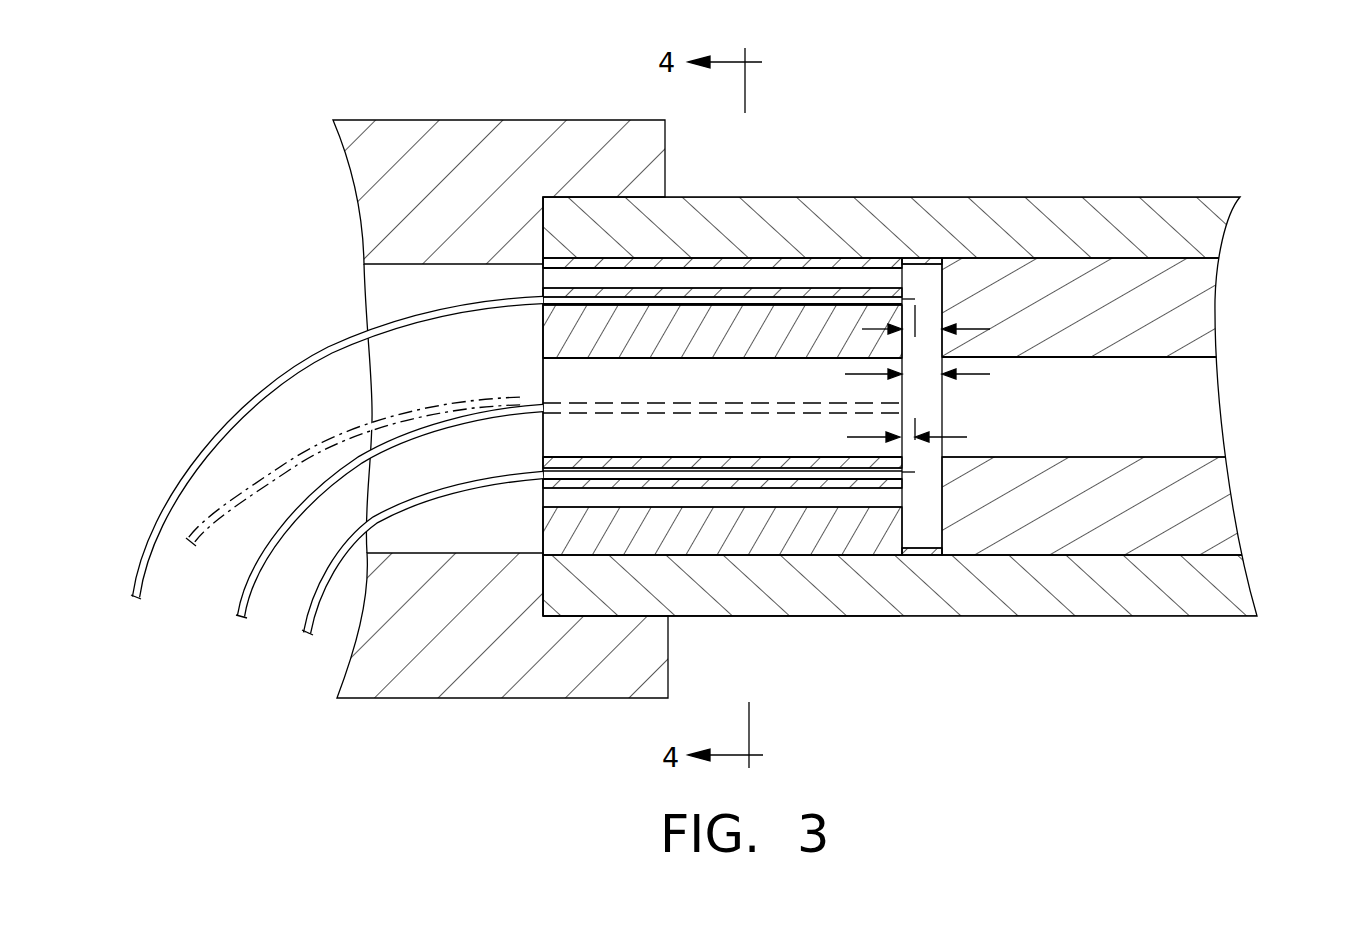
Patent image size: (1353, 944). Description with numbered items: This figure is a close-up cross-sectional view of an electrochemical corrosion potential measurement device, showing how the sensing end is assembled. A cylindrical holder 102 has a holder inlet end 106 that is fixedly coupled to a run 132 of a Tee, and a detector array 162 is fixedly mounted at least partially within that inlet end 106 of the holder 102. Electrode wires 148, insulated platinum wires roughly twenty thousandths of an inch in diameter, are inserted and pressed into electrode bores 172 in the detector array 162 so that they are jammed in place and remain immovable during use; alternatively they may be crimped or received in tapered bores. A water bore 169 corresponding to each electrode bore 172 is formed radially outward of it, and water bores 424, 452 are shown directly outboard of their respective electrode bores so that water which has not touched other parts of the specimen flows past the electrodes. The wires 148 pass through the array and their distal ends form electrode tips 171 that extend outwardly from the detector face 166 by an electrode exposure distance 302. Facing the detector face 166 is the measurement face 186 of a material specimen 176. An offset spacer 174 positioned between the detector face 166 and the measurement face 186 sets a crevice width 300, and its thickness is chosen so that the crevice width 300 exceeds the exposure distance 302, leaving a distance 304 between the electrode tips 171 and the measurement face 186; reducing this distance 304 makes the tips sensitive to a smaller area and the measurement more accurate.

The cylindrical holder 102 is at (1067, 207).
The holder inlet end 106 is at (755, 207).
The run 132 is at (460, 133).
The wires 148 is at (262, 452).
The detector array 162 is at (693, 543).
The detector face 166 is at (905, 520).
The water bore 169 is at (850, 287).
The electrode tip 171 is at (915, 297).
The electrode bore 172 is at (585, 413).
The offset spacer 174 is at (932, 553).
The material specimen 176 is at (1192, 490).
The measurement face 186 is at (920, 550).
The crevice width 300 is at (983, 378).
The electrode exposure distance 302 is at (962, 437).
The distance 304 is at (983, 328).
The water bore 424 is at (575, 505).
The water bore 452 is at (567, 288).